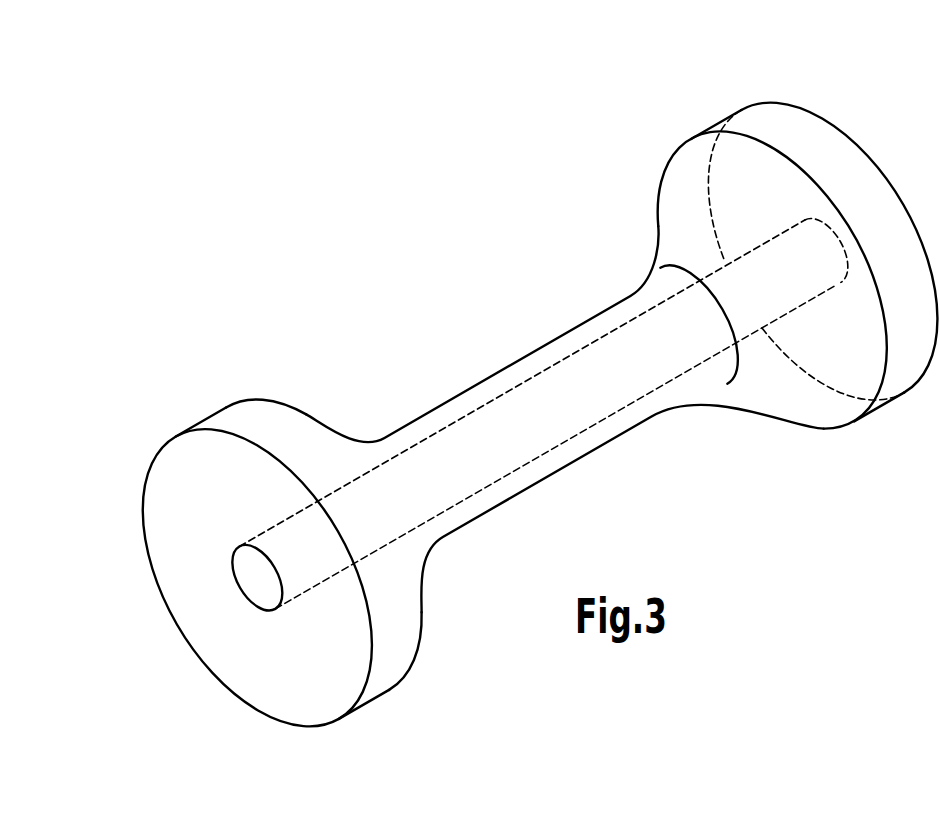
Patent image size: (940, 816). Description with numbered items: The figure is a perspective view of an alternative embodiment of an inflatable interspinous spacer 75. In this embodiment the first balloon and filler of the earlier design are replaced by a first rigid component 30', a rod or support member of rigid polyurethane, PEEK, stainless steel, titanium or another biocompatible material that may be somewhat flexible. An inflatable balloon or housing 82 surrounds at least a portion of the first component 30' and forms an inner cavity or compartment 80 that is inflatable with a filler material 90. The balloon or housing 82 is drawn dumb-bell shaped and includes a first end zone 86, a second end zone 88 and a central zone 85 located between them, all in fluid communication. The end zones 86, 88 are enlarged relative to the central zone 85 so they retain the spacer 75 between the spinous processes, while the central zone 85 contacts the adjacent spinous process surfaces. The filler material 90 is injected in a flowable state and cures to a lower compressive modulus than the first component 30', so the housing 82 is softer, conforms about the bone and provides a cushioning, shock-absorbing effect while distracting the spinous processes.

The spacer 75 is at (405, 236).
The first rigid component 30' is at (554, 403).
The inner cavity or compartment 80 is at (400, 618).
The inflatable balloon or housing 82 is at (568, 330).
The central zone 85 is at (593, 440).
The first end zone 86 is at (247, 428).
The second end zone 88 is at (770, 120).
The filler material 90 is at (685, 190).